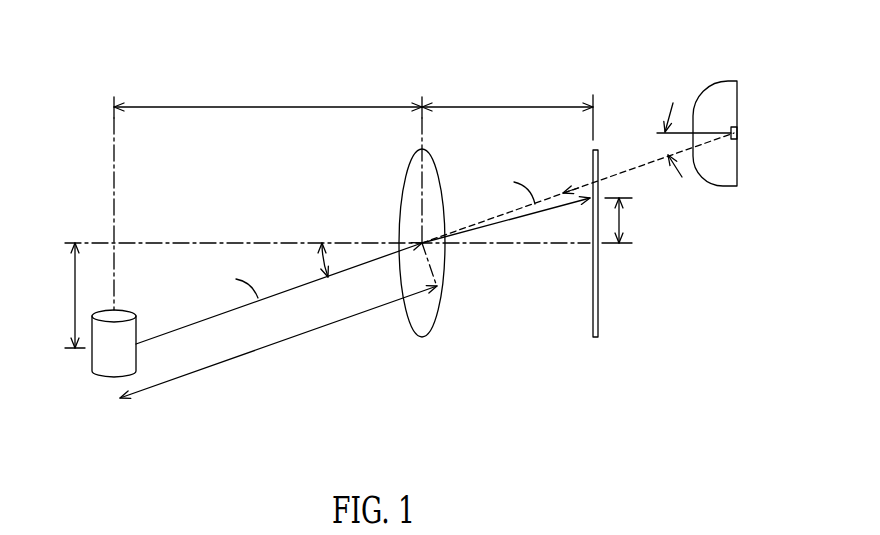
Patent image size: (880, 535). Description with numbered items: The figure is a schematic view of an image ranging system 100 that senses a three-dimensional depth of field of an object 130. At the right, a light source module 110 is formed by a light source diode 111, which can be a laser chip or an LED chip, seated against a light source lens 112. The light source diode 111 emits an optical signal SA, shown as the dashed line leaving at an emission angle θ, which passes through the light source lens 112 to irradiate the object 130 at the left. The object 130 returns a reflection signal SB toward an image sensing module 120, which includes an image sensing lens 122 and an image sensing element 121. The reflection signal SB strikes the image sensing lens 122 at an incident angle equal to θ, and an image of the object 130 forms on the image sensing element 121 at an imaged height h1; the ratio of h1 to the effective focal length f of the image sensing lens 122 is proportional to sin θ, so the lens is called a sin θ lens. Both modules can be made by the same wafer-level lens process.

The image ranging system 100 is at (158, 82).
The light source module 110 is at (673, 93).
The light source diode 111 is at (733, 126).
The light source lens 112 is at (705, 105).
The image sensing module 120 is at (498, 275).
The image sensing element 121 is at (569, 260).
The image sensing lens 122 is at (437, 318).
The object 130 is at (93, 360).